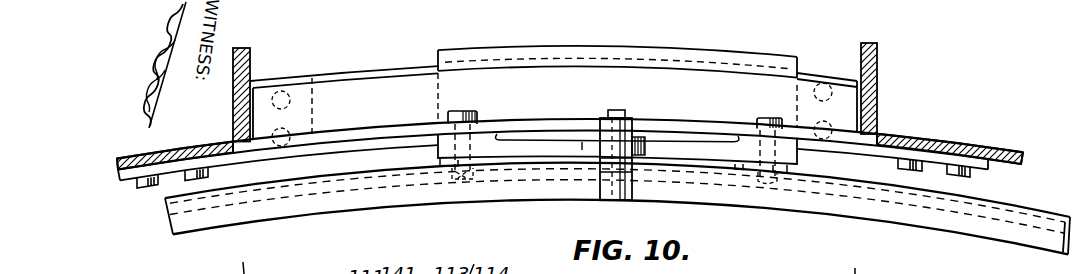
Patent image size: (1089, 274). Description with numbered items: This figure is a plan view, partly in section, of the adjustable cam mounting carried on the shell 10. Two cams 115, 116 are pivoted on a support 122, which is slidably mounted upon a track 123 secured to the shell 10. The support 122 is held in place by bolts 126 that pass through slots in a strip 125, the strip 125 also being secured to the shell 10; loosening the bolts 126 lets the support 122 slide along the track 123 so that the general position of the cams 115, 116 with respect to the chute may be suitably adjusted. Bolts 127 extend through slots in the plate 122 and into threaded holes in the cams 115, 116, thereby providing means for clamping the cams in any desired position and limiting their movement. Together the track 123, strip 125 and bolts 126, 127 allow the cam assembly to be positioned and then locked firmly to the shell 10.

The shell 10 is at (940, 138).
The cam 115 is at (480, 193).
The cam 116 is at (722, 197).
The support 122 is at (609, 47).
The track 123 is at (366, 65).
The strip 125 is at (806, 82).
The bolts 126 is at (752, 118).
The bolts 127 is at (453, 168).